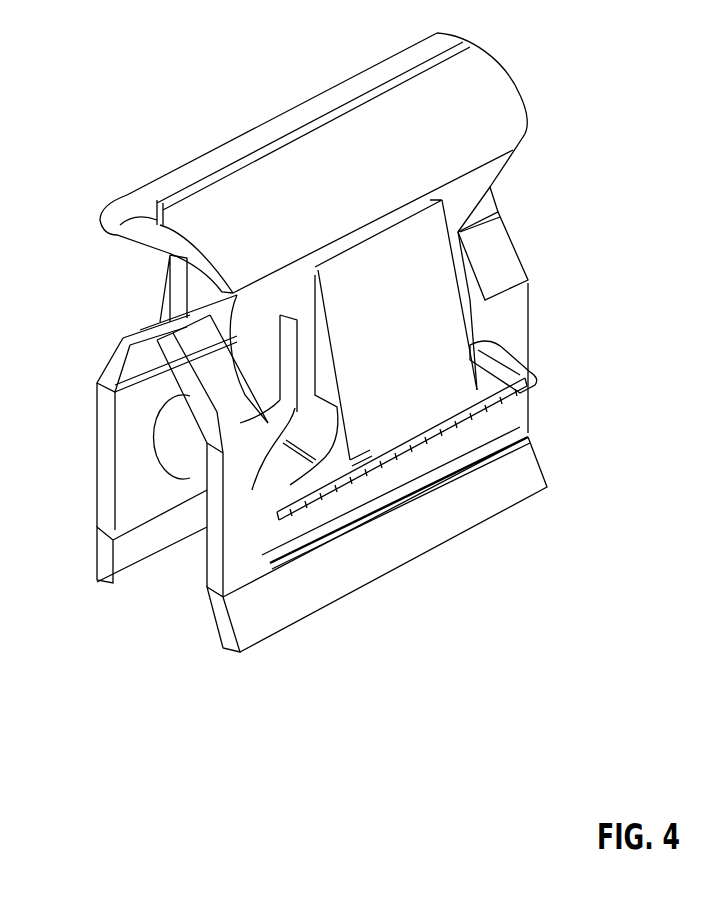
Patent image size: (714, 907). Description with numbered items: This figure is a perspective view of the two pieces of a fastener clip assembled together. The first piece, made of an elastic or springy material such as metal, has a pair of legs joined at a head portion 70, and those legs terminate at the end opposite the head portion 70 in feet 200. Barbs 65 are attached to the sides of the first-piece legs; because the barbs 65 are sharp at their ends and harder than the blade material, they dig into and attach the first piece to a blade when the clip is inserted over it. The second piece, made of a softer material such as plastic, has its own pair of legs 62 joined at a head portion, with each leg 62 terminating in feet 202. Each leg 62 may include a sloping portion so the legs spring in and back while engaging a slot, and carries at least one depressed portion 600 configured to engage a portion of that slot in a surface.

The head portion 70 is at (358, 103).
The barbs 65 is at (495, 262).
The legs 62 is at (387, 312).
The depressed portion 600 is at (455, 425).
The feet 202 is at (435, 455).
The feet 200 is at (390, 540).